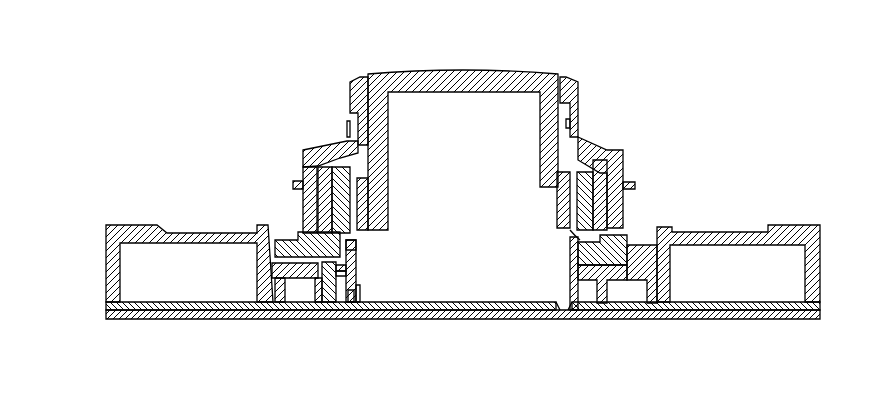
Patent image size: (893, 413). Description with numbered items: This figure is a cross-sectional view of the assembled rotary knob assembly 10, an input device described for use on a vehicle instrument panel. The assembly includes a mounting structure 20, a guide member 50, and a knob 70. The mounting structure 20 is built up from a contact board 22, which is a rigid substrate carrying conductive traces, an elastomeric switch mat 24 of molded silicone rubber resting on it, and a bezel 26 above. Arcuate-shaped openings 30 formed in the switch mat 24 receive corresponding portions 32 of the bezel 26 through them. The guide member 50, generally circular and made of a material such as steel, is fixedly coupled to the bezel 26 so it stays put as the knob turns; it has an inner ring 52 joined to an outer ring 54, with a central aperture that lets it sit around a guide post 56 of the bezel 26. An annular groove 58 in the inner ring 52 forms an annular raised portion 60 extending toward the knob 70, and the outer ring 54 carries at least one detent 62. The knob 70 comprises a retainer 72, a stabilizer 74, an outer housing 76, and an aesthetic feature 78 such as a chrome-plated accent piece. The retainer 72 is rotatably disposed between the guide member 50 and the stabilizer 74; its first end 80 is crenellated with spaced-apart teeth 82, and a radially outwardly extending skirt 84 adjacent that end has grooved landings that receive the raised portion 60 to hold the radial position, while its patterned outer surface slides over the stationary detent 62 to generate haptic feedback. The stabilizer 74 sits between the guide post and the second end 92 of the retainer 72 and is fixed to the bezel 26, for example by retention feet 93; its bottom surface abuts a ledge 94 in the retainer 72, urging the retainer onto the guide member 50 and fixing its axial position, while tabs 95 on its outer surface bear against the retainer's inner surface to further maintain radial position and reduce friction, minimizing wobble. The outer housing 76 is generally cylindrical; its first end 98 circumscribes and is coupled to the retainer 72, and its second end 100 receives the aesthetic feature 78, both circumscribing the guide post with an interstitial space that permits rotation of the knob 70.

The rotary knob assembly 10 is at (154, 80).
The mounting structure 20 is at (64, 223).
The contact board 22 is at (98, 310).
The elastomeric switch mat 24 is at (98, 301).
The bezel 26 is at (97, 232).
The arcuate-shaped openings 30 is at (563, 315).
The portions of the bezel 32 is at (347, 300).
The guide member 50 is at (329, 264).
The inner ring 52 is at (353, 272).
The outer ring 54 is at (283, 268).
The guide post 56 is at (367, 210).
The annular groove 58 is at (318, 262).
The annular raised portion 60 is at (352, 254).
The detent 62 is at (643, 242).
The knob 70 is at (305, 92).
The retainer 72 is at (265, 247).
The stabilizer 74 is at (562, 188).
The outer housing 76 is at (302, 146).
The aesthetic feature 78 is at (358, 80).
The first end of the retainer 80 is at (358, 292).
The teeth 82 is at (352, 285).
The skirt 84 is at (270, 246).
The second end of the retainer 92 is at (302, 176).
The retention feet 93 is at (576, 241).
The ledge 94 is at (573, 233).
The tabs 95 is at (618, 158).
The first end of the outer housing 98 is at (625, 205).
The second end of the outer housing 100 is at (580, 92).